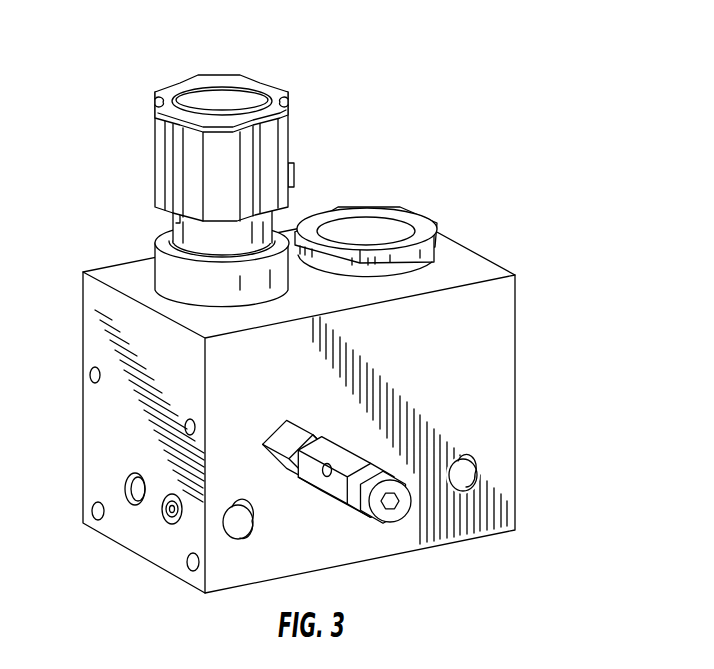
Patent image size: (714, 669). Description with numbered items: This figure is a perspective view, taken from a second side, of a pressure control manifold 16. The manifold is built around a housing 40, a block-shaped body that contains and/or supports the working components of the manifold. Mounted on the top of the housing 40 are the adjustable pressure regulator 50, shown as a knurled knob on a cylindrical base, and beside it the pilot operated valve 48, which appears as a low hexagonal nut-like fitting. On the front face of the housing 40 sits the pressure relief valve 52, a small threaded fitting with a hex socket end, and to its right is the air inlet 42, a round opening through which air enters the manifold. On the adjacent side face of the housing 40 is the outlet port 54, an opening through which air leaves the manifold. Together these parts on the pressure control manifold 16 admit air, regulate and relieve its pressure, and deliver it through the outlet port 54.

The pressure control manifold 16 is at (356, 315).
The housing 40 is at (516, 351).
The air inlet 42 is at (473, 540).
The pilot operated valve 48 is at (368, 207).
The adjustable pressure regulator 50 is at (166, 84).
The pressure relief valve 52 is at (377, 527).
The outlet port 54 is at (132, 503).